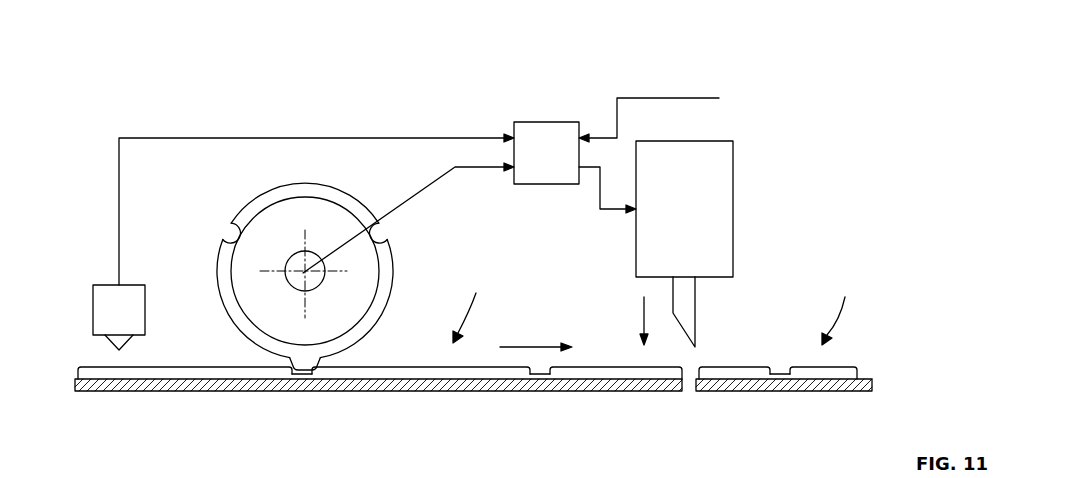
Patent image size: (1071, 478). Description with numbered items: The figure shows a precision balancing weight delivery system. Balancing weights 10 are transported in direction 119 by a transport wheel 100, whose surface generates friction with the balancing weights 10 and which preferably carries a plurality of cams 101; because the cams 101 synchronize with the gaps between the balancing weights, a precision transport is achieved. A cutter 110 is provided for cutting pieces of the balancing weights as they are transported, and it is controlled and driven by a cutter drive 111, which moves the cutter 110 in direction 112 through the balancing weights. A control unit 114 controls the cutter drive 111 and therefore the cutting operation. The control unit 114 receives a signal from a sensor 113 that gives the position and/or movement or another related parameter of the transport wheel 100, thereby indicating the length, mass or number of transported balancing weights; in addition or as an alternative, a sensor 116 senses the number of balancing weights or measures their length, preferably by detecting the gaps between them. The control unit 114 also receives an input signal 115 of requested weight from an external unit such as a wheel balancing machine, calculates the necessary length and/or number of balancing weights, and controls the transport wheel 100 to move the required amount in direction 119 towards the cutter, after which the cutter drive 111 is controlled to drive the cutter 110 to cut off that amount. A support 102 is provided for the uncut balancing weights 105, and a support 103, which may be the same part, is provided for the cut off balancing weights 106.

The balancing weights 10 is at (193, 367).
The transport wheel 100 is at (337, 200).
The cams 101 is at (226, 224).
The support 102 is at (362, 383).
The support 103 is at (785, 393).
The uncut balancing weights 105 is at (475, 305).
The cut off balancing weights 106 is at (782, 324).
The cutter 110 is at (685, 310).
The cutter drive 111 is at (717, 208).
The direction 112 is at (644, 310).
The sensor 113 is at (297, 278).
The control unit 114 is at (546, 142).
The input signal 115 is at (677, 98).
The sensor 116 is at (130, 293).
The direction 119 is at (528, 347).